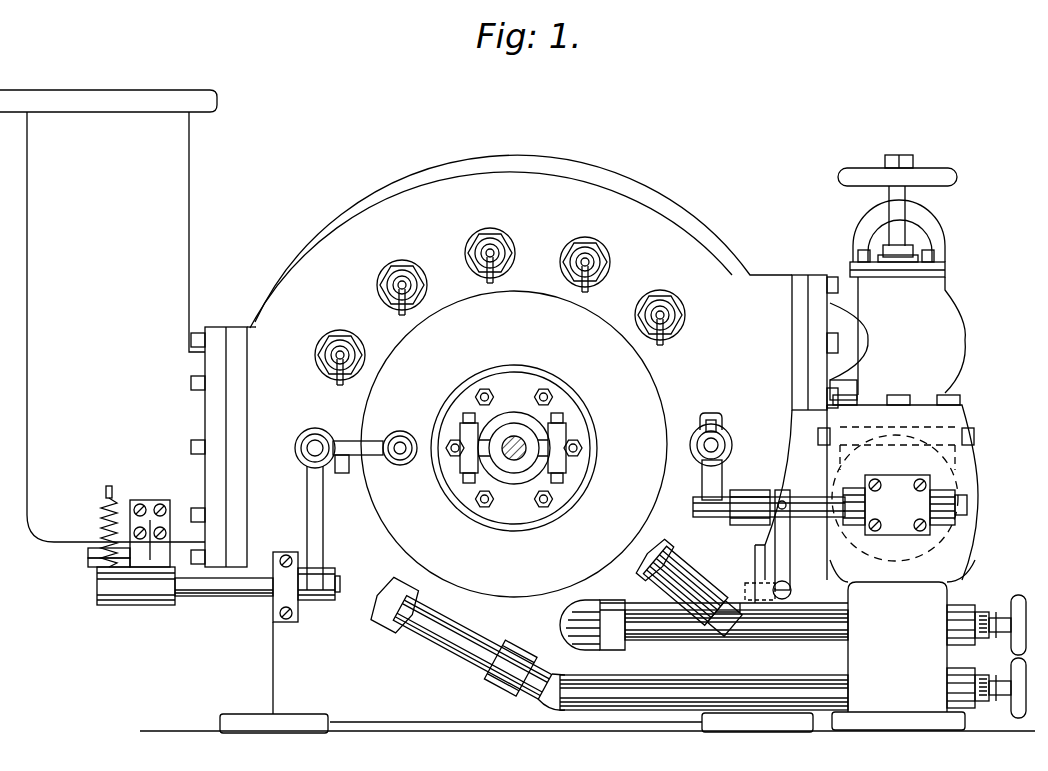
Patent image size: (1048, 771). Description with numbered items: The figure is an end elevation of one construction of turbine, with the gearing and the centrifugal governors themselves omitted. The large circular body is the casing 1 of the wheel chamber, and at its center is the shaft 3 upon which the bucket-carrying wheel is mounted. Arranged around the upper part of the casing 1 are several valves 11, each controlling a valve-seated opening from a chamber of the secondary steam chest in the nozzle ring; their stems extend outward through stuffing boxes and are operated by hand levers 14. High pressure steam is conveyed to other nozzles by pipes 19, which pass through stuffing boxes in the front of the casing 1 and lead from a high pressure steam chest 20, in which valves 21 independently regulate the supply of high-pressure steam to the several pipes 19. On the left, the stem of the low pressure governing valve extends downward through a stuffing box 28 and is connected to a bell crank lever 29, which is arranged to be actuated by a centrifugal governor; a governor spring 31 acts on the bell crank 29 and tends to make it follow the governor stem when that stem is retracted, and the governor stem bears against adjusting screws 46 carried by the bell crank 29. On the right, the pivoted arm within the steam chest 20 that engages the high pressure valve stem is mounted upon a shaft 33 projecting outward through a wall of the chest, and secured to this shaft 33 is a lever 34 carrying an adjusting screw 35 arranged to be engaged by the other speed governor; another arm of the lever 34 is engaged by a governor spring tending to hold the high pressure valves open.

The casing 1 is at (645, 212).
The shaft 3 is at (514, 461).
The valve 11 is at (468, 248).
The hand lever 14 is at (486, 285).
The pipe 19 is at (456, 652).
The high pressure steam chest 20 is at (860, 600).
The valve 21 is at (992, 614).
The stuffing box 28 is at (90, 551).
The bell crank lever 29 is at (312, 510).
The governor spring 31 is at (102, 522).
The shaft 33 is at (820, 516).
The lever 34 is at (718, 478).
The adjusting screw 35 is at (727, 438).
The adjusting screw 46 is at (297, 452).